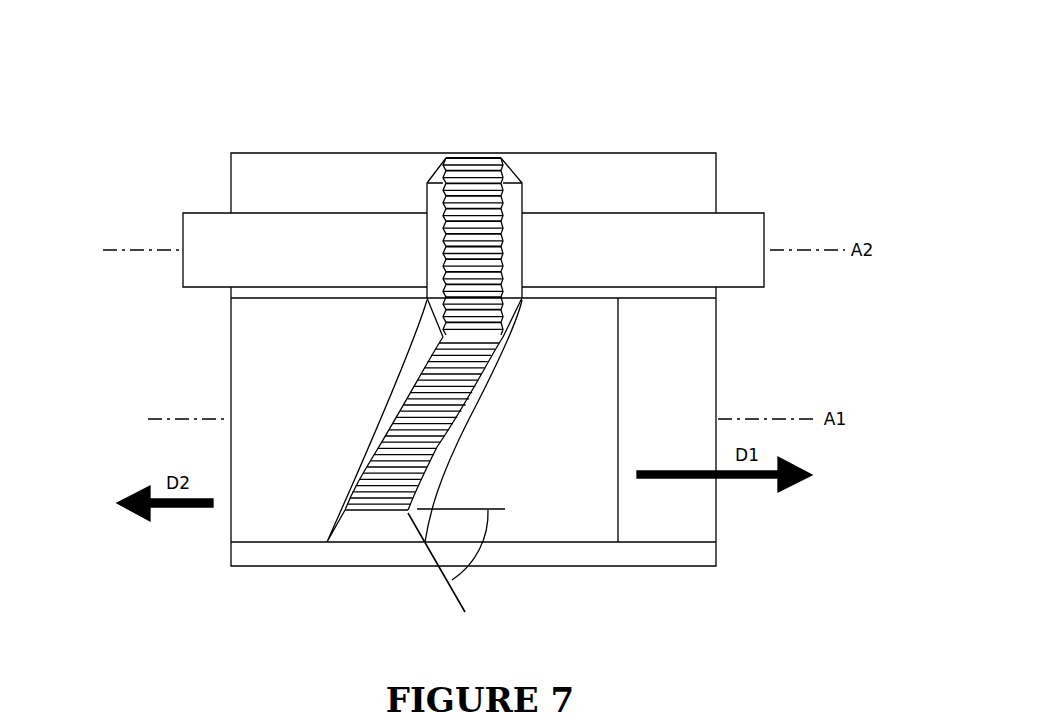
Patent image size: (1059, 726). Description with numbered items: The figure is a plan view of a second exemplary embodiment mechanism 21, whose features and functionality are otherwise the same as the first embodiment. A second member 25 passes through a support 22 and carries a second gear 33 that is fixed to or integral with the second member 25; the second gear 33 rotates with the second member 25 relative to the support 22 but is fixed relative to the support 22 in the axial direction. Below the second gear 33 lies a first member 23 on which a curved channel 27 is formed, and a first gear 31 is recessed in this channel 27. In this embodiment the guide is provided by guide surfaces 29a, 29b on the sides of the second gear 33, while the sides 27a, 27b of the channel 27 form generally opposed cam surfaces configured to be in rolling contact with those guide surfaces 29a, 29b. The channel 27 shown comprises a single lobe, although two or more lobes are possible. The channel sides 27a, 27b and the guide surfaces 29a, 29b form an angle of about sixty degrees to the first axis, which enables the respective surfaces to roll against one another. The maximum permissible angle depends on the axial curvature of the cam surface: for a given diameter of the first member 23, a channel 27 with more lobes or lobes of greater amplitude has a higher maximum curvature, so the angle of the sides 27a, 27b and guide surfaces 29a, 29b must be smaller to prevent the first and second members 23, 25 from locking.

The mechanism 21 is at (773, 109).
The support 22 is at (228, 174).
The first member 23 is at (228, 525).
The second member 25 is at (764, 238).
The curved channel 27 is at (483, 462).
The channel side 27a is at (413, 360).
The channel side 27b is at (440, 465).
The guide surface 29a is at (431, 233).
The guide surface 29b is at (512, 210).
The first gear 31 is at (360, 487).
The second gear 33 is at (470, 295).